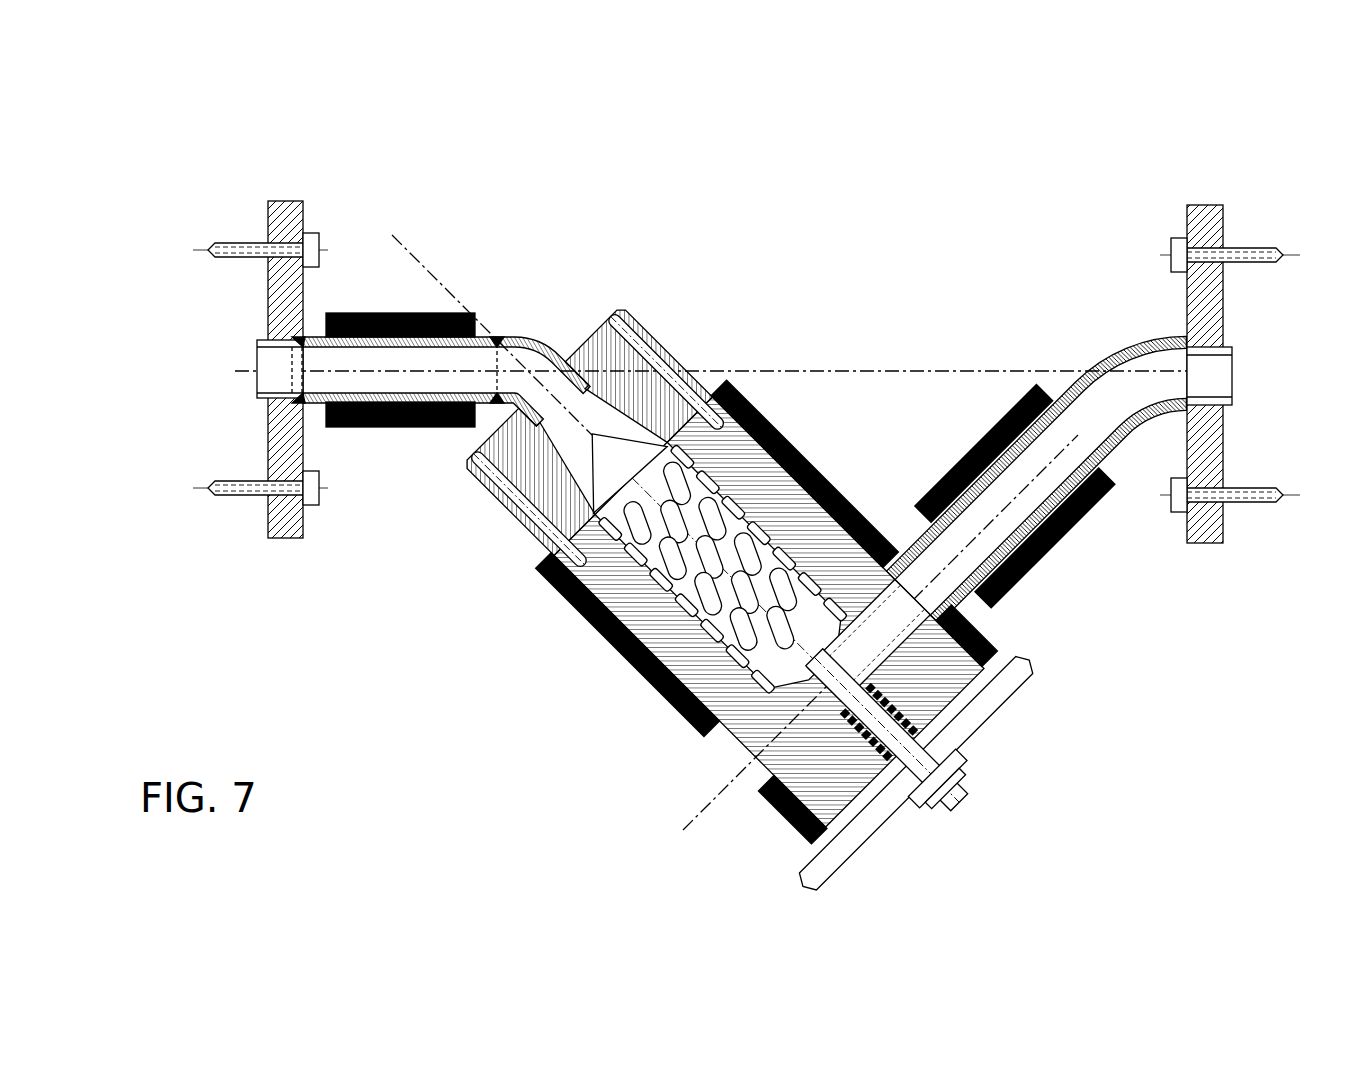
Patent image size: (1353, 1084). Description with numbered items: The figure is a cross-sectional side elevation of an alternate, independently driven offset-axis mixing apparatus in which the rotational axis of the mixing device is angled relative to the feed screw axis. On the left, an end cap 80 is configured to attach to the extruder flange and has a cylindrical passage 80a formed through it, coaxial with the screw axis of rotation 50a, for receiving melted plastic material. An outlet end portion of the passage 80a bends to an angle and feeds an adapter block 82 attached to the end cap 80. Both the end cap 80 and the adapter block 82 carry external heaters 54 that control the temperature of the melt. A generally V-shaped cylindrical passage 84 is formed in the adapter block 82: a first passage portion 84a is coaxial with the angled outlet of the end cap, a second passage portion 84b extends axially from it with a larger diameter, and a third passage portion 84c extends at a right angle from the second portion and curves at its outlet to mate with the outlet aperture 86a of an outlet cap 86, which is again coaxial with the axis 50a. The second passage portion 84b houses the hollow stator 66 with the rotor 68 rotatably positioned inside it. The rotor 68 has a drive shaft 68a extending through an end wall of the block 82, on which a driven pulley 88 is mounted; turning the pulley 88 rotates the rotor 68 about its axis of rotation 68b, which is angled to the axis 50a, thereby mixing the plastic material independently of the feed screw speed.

The axis of rotation 50a is at (905, 368).
The external heaters 54 is at (385, 428).
The stator 66 is at (717, 632).
The rotor 68 is at (785, 437).
The drive shaft 68a is at (957, 792).
The axis of rotation 68b is at (410, 250).
The end cap 80 is at (272, 213).
The cylindrical passage 80a is at (265, 361).
The adapter block 82 is at (740, 445).
The V-shaped cylindrical passage 84 is at (571, 451).
The first passage portion 84a is at (554, 333).
The second passage portion 84b is at (777, 670).
The third passage portion 84c is at (1115, 400).
The outlet cap 86 is at (1190, 217).
The outlet aperture 86a is at (1232, 362).
The driven pulley 88 is at (853, 847).